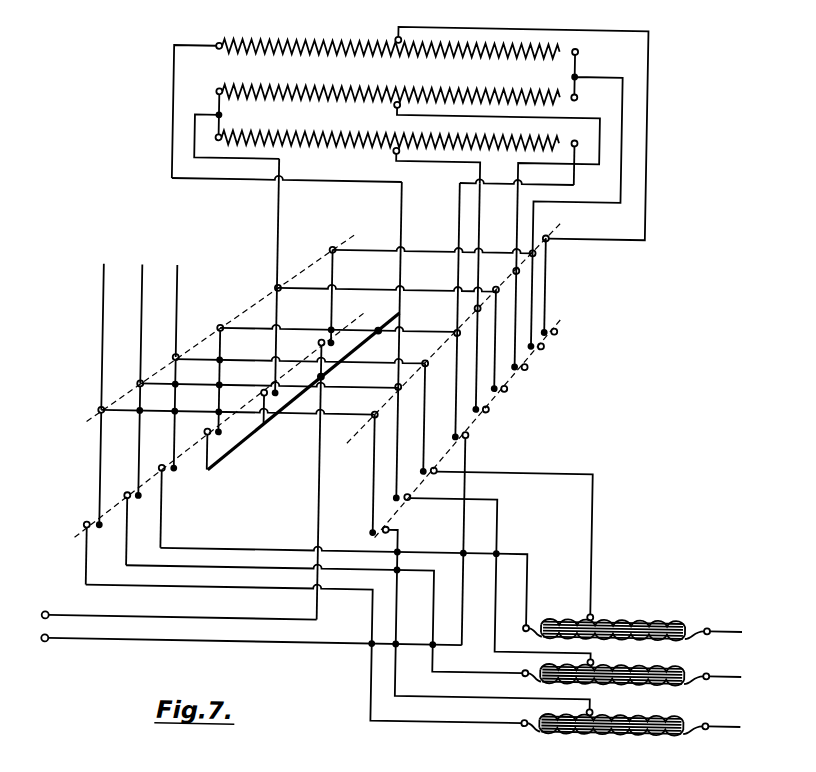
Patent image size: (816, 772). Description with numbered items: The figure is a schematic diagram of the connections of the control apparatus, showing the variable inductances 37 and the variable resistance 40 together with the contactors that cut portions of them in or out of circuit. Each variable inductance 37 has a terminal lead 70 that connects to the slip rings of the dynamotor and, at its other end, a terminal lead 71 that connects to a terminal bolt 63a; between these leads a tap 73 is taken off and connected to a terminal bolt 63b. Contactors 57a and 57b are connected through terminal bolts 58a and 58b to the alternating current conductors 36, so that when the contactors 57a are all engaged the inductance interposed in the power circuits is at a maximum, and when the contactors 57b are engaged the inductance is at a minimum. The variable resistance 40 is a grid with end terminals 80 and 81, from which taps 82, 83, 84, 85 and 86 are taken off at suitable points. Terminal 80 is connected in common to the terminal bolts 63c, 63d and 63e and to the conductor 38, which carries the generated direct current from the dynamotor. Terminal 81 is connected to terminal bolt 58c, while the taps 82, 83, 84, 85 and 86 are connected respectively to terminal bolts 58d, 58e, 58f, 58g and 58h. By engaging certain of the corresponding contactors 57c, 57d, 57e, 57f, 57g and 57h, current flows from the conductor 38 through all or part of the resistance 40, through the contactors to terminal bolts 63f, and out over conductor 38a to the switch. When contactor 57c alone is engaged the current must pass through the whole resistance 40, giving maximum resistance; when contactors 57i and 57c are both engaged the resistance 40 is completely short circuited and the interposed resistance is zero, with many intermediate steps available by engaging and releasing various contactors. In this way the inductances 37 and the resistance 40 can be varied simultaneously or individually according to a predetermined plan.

The variable resistance 40 is at (250, 43).
The end terminal 80 is at (210, 46).
The tap 82 is at (388, 38).
The tap 83 is at (572, 73).
The tap 85 is at (218, 118).
The tap 84 is at (389, 107).
The tap 86 is at (389, 153).
The end terminal 81 is at (573, 141).
The conductors 36 is at (139, 300).
The contactor 57i is at (218, 328).
The terminal bolt 58a is at (100, 412).
The contactor 57a is at (172, 442).
The terminal bolt 63a is at (160, 473).
The terminal bolt 63c is at (212, 440).
The terminal bolt 63d is at (266, 399).
The terminal bolt 63e is at (334, 347).
The terminal bolt 58c is at (452, 330).
The terminal bolt 58b is at (373, 420).
The contactor 57b is at (374, 503).
The terminal bolt 58d is at (548, 234).
The contactor 57d is at (534, 251).
The terminal bolt 58e is at (518, 270).
The contactor 57e is at (498, 288).
The terminal bolt 58f is at (480, 307).
The contactor 57f is at (459, 331).
The terminal bolt 58g is at (557, 330).
The contactor 57g is at (543, 346).
The terminal bolt 58h is at (527, 367).
The contactor 57h is at (507, 388).
The contactor 57c is at (490, 410).
The terminal bolt 63f is at (470, 436).
The terminal bolt 63b is at (439, 473).
The conductor 38 is at (118, 620).
The conductor 38a is at (212, 646).
The variable inductance 37 is at (646, 617).
The terminal lead 71 is at (533, 623).
The terminal lead 70 is at (714, 624).
The tap 73 is at (597, 611).